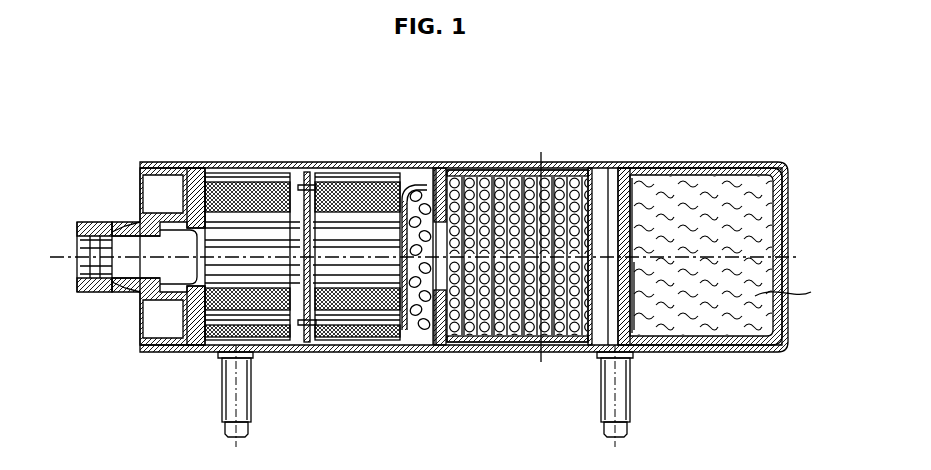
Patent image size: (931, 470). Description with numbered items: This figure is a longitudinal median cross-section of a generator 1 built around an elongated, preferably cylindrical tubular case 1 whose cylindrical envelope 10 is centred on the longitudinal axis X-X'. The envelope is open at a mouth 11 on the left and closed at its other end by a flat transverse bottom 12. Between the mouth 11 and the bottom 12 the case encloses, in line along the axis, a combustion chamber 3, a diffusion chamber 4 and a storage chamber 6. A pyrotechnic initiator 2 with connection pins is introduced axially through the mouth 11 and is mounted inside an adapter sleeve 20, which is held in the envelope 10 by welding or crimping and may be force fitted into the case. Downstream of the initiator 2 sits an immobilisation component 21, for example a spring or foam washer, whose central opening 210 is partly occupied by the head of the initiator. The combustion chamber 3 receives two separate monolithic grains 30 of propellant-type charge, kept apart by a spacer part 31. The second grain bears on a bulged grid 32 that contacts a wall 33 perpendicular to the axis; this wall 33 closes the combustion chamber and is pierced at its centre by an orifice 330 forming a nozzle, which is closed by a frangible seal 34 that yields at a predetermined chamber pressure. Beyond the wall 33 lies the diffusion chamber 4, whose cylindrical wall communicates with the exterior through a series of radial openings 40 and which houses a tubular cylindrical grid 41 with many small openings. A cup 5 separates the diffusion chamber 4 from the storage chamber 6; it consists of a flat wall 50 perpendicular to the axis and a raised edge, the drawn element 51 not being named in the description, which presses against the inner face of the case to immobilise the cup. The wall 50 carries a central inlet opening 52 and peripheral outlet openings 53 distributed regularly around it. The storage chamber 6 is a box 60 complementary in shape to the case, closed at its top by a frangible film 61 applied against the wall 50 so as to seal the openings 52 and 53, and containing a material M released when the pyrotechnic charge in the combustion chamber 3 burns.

The generator / tubular case 1 is at (447, 124).
The pyrotechnic initiator 2 is at (162, 268).
The combustion chamber 3 is at (338, 166).
The diffusion chamber 4 is at (523, 351).
The cup 5 is at (598, 190).
The storage chamber 6 is at (697, 206).
The cylindrical envelope 10 is at (431, 348).
The mouth (open end) 11 is at (126, 332).
The bottom (closed end) 12 is at (788, 211).
The adapter sleeve 20 is at (101, 214).
The immobilisation component 21 is at (196, 172).
The monolithic grains 30 is at (247, 166).
The spacer part 31 is at (306, 172).
The bulged grid 32 is at (413, 170).
The wall 33 is at (441, 316).
The frangible seal 34 is at (435, 281).
The openings 40 is at (538, 167).
The grid 41 is at (497, 321).
The flat wall (cup bottom) 50 is at (623, 353).
The fitting flange 51 is at (600, 359).
The inlet opening 52 is at (617, 170).
The outlet openings 53 is at (625, 221).
The box 60 is at (732, 341).
The frangible film 61 is at (631, 269).
The central opening 210 is at (193, 286).
The orifice (nozzle) 330 is at (452, 283).